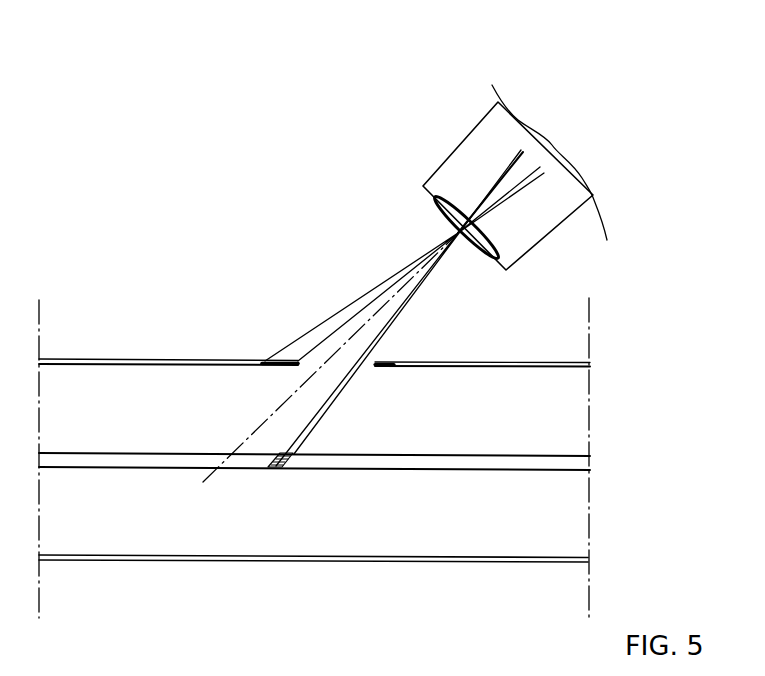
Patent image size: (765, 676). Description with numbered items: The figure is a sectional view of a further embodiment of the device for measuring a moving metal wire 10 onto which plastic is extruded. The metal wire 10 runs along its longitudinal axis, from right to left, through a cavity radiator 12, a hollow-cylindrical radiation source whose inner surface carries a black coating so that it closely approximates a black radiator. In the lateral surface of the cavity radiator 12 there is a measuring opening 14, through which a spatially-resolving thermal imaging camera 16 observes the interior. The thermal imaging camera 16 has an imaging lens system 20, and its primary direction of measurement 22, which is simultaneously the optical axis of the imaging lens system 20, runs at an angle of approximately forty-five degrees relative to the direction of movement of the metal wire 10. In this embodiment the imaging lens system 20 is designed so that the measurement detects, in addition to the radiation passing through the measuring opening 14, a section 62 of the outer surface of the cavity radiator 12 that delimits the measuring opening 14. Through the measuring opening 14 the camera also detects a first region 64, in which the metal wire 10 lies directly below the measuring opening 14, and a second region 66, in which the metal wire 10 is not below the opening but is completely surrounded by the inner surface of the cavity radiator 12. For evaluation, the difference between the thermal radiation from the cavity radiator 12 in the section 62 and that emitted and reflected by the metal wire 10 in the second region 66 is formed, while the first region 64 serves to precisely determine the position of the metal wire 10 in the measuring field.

The metal wire 10 is at (435, 456).
The cavity radiator 12 is at (532, 362).
The measuring opening 14 is at (376, 362).
The thermal imaging camera 16 is at (510, 137).
The imaging lens system 20 is at (447, 212).
The primary direction of measurement 22 is at (353, 337).
The section of the outer surface 62 is at (265, 360).
The first region 64 is at (293, 467).
The second region 66 is at (205, 453).